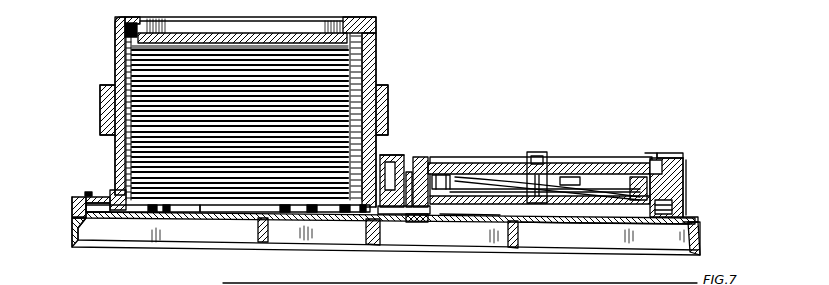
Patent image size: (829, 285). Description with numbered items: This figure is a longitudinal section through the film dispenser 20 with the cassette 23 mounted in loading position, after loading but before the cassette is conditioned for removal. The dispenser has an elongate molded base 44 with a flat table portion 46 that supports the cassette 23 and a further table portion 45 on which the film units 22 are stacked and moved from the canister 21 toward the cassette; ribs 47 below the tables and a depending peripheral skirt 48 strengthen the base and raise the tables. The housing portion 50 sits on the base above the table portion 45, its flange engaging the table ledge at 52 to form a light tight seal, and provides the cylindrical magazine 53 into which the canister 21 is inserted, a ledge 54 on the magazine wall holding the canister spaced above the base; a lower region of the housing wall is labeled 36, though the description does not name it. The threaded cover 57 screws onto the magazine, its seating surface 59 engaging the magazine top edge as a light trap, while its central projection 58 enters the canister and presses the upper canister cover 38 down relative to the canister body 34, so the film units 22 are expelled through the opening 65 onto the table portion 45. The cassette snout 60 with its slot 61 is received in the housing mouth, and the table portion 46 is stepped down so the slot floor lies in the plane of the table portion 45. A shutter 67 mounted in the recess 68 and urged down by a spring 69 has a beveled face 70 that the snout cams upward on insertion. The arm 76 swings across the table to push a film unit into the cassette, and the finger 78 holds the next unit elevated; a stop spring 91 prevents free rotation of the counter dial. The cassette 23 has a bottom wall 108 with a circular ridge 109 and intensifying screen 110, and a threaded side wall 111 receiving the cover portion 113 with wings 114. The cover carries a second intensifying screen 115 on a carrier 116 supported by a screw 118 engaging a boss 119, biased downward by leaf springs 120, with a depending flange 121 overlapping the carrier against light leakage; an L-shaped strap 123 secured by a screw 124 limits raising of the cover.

The film dispenser 20 is at (68, 237).
The canister 21 is at (117, 50).
The film units 22 is at (362, 87).
The cassette 23 is at (445, 152).
The canister body 34 is at (373, 62).
The housing lower wall 36 is at (110, 180).
The upper canister cover 38 is at (165, 50).
The base 44 is at (498, 248).
The table portion 45 is at (185, 210).
The table portion 46 is at (693, 221).
The ribs 47 is at (225, 243).
The peripheral skirt 48 is at (700, 237).
The housing portion 50 is at (108, 145).
The flange engaging ledge 52 is at (77, 217).
The magazine 53 is at (383, 153).
The ledge 54 is at (112, 198).
The cover 57 is at (372, 22).
The projection 58 is at (273, 36).
The seating surface 59 is at (100, 87).
The snout 60 is at (387, 219).
The slot 61 is at (382, 223).
The opening 65 is at (370, 218).
The shutter 67 is at (415, 158).
The recess 68 is at (384, 160).
The spring 69 is at (408, 173).
The beveled face 70 is at (413, 222).
The arm 76 is at (345, 217).
The finger 78 is at (148, 212).
The stop spring 91 is at (395, 284).
The bottom wall 108 is at (582, 230).
The ridge 109 is at (445, 222).
The intensifying screen 110 is at (565, 230).
The side wall portion 111 is at (672, 182).
The cover portion 113 is at (673, 153).
The wings 114 is at (557, 160).
The intensifying screen 115 is at (604, 200).
The carrier portion 116 is at (570, 200).
The screw 118 is at (528, 160).
The boss 119 is at (517, 177).
The leaf springs 120 is at (455, 173).
The flange 121 is at (647, 153).
The strap 123 is at (684, 166).
The screw 124 is at (683, 208).